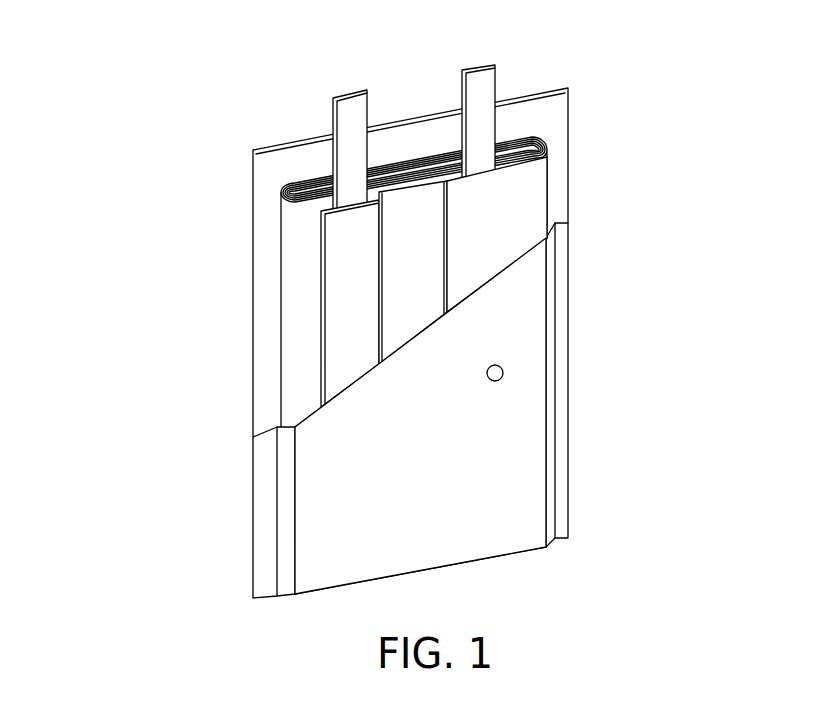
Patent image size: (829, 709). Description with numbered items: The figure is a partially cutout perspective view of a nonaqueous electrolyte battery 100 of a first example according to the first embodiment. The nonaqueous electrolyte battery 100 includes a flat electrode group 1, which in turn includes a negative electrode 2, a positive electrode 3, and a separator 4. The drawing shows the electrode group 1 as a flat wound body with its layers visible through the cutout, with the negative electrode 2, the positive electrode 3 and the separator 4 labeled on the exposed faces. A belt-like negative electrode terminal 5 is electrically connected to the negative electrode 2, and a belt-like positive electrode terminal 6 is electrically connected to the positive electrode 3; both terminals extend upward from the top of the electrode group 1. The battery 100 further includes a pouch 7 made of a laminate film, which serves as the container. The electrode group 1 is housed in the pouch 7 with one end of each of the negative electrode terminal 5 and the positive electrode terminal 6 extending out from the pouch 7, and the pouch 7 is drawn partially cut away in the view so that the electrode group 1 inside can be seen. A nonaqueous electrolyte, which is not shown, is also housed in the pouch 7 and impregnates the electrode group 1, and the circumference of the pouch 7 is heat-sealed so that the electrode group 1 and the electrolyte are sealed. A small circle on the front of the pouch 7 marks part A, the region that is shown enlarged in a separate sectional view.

The nonaqueous electrolyte battery 100 is at (458, 311).
The flat electrode group 1 is at (467, 225).
The negative electrode 2 is at (625, 284).
The positive electrode 3 is at (353, 272).
The separator 4 is at (425, 232).
The negative electrode terminal 5 is at (478, 80).
The positive electrode terminal 6 is at (352, 103).
The pouch 7 is at (525, 446).
The part A is at (503, 372).